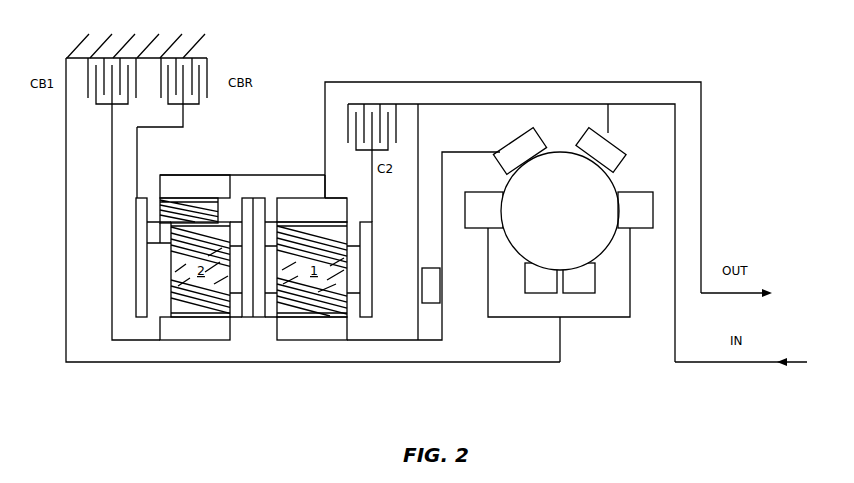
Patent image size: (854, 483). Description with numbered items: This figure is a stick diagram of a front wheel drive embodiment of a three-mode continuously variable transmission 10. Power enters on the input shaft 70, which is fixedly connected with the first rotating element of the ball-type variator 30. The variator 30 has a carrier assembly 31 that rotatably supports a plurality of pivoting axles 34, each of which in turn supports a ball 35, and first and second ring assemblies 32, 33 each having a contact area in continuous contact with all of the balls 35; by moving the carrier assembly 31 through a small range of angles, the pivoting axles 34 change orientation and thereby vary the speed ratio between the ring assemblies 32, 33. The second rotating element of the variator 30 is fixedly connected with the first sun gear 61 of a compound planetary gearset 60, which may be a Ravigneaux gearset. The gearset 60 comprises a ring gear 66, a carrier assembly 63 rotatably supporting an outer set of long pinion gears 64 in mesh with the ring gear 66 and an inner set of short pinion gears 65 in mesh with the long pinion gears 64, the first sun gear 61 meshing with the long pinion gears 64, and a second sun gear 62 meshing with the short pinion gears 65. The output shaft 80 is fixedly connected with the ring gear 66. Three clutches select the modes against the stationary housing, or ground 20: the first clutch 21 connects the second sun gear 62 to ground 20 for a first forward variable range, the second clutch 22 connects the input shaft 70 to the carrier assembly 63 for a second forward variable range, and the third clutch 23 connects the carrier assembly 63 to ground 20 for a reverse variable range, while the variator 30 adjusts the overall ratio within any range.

The continuously variable transmission 10 is at (760, 50).
The stationary housing ground 20 is at (143, 33).
The first clutch 21 is at (90, 83).
The second clutch 22 is at (387, 113).
The third clutch 23 is at (207, 77).
The ball-type variator 30 is at (558, 114).
The carrier assembly 31 is at (582, 318).
The first ring assembly 32 is at (610, 153).
The second ring assembly 33 is at (522, 143).
The pivoting axle 34 is at (628, 197).
The ball 35 is at (595, 242).
The compound planetary gearset 60 is at (246, 132).
The first sun gear 61 is at (315, 330).
The second sun gear 62 is at (200, 332).
The carrier assembly 63 is at (142, 242).
The long pinion gear 64 is at (163, 210).
The short pinion gear 65 is at (187, 282).
The ring gear 66 is at (293, 210).
The input shaft 70 is at (749, 363).
The output shaft 80 is at (763, 290).